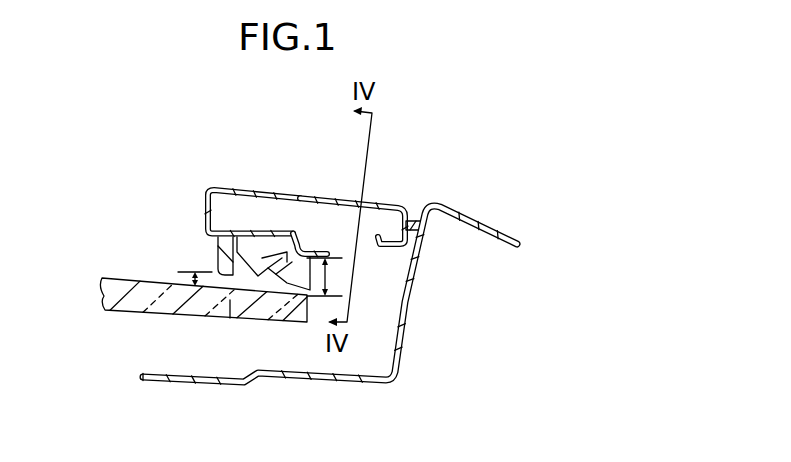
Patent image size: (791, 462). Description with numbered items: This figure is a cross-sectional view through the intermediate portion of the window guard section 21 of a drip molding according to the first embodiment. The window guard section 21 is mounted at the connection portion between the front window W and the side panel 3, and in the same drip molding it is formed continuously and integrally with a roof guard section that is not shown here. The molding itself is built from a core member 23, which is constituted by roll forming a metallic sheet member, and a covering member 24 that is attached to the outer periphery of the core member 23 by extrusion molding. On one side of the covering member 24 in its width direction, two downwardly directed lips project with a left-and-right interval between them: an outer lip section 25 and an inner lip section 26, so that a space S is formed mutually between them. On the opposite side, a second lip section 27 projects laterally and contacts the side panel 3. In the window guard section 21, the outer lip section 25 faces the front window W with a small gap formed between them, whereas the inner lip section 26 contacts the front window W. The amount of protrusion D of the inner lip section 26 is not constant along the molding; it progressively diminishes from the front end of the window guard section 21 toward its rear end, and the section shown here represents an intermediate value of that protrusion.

The window guard section 21 is at (330, 235).
The covering member 24 is at (280, 187).
The core member 23 is at (333, 207).
The second lip section 27 is at (411, 218).
The side panel 3 is at (418, 268).
The outer lip section 25 is at (220, 256).
The inner lip section 26 is at (287, 300).
The front window W is at (138, 280).
The space S is at (265, 257).
The amount of protrusion D is at (327, 277).